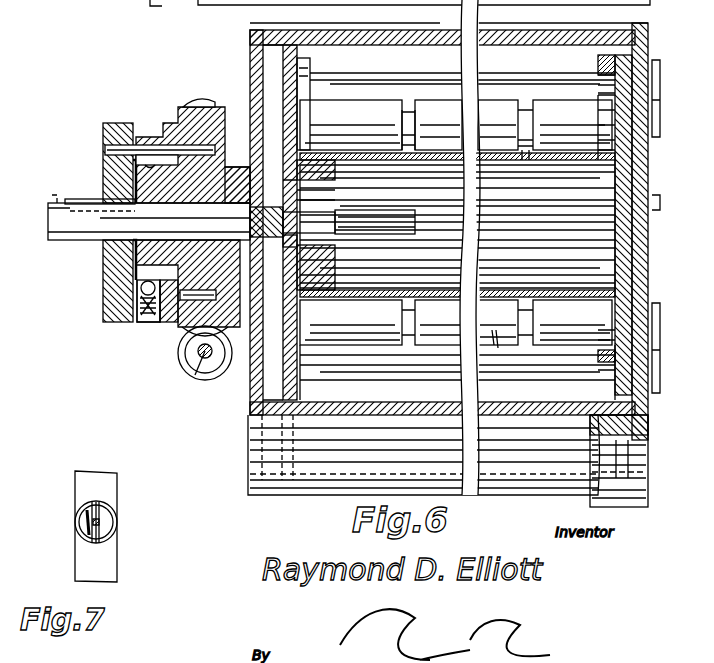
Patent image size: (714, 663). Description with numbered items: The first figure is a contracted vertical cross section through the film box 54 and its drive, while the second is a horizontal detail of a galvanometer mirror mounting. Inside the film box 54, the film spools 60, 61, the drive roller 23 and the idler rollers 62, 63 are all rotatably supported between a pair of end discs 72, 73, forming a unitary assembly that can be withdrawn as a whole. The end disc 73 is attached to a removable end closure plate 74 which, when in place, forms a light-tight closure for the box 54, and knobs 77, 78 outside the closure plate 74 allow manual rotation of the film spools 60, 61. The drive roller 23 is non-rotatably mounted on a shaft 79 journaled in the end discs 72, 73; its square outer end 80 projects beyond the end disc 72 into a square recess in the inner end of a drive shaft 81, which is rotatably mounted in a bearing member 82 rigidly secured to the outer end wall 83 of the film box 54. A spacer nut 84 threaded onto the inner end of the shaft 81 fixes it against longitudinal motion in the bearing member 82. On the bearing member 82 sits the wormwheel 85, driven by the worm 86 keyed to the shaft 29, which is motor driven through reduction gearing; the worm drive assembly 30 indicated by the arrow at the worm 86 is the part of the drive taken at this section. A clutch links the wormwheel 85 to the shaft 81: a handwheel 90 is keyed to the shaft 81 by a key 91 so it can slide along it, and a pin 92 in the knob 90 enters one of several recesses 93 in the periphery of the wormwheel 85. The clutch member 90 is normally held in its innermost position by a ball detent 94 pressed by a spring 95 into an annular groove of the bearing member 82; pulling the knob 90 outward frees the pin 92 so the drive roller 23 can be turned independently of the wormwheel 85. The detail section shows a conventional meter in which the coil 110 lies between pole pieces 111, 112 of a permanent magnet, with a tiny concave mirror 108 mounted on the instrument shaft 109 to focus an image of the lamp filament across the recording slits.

In FIG. 6, the outer end wall 83 is at (252, 50).
In FIG. 6, the wormwheel 85 is at (190, 104).
In FIG. 6, the recesses 93 is at (208, 120).
In FIG. 6, the handwheel 90 is at (110, 122).
In FIG. 6, the pin 92 is at (148, 144).
In FIG. 6, the key 91 is at (75, 198).
In FIG. 6, the drive shaft 81 is at (72, 240).
In FIG. 6, the ball detent 94 is at (140, 289).
In FIG. 6, the spring 95 is at (140, 306).
In FIG. 6, the worm 86 is at (178, 353).
In FIG. 6, the drive assembly 30 is at (176, 372).
In FIG. 6, the shaft 29 is at (194, 378).
In FIG. 6, the bearing member 82 is at (233, 170).
In FIG. 6, the square outer end 80 is at (265, 222).
In FIG. 6, the shaft 79 is at (340, 223).
In FIG. 6, the spacer nut 84 is at (277, 262).
In FIG. 6, the drive roller 23 is at (325, 282).
In FIG. 6, the end disc 72 is at (305, 56).
In FIG. 6, the film spool 60 is at (426, 84).
In FIG. 6, the idler roller 62 is at (496, 108).
In FIG. 6, the end disc 73 is at (614, 58).
In FIG. 6, the knob 77 is at (624, 80).
In FIG. 6, the end closure plate 74 is at (630, 195).
In FIG. 6, the idler roller 63 is at (505, 344).
In FIG. 6, the knob 78 is at (608, 356).
In FIG. 6, the film spool 61 is at (408, 372).
In FIG. 6, the film box 54 is at (302, 486).
In FIG. 7, the pole piece 111 is at (112, 484).
In FIG. 7, the shaft 109 is at (100, 521).
In FIG. 7, the coil 110 is at (100, 529).
In FIG. 7, the concave mirror 108 is at (88, 522).
In FIG. 7, the pole piece 112 is at (112, 571).